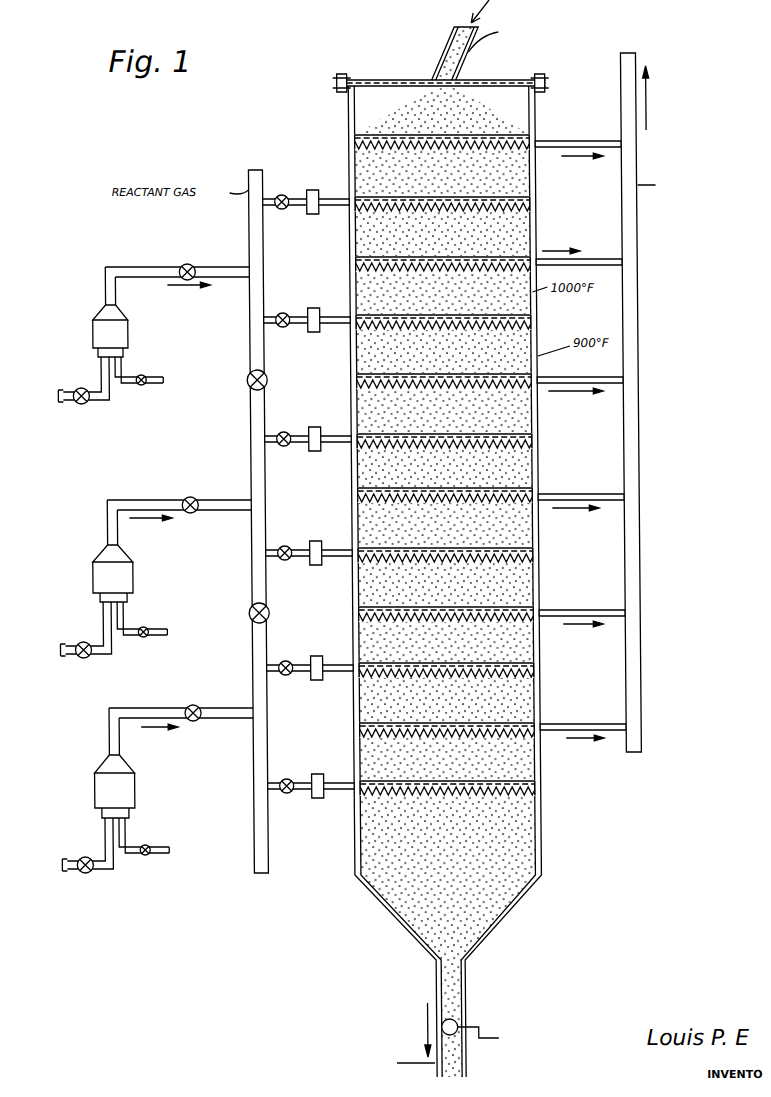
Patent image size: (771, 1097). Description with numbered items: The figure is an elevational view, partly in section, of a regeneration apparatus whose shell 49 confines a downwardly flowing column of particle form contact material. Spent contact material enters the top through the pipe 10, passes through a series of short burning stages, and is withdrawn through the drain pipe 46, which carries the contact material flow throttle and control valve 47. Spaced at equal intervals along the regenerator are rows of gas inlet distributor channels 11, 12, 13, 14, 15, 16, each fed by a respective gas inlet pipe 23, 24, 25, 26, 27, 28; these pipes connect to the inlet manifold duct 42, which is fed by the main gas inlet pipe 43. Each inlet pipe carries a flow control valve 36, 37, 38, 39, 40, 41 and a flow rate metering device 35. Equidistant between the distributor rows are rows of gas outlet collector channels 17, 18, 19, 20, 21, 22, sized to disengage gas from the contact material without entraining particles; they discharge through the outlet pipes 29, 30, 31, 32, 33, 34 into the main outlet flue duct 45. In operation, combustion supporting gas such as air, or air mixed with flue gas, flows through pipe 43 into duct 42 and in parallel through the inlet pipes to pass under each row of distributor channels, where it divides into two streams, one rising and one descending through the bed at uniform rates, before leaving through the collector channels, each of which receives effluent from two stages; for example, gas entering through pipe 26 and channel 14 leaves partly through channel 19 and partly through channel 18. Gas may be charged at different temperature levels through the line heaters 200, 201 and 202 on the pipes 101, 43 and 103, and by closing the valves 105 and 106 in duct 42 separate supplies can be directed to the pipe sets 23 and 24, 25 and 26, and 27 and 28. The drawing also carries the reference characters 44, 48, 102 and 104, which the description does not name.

The pipe 10 is at (448, 50).
The gas inlet distributor channel 11 is at (530, 203).
The gas inlet distributor channel 12 is at (530, 322).
The gas inlet distributor channel 13 is at (530, 441).
The gas inlet distributor channel 14 is at (530, 556).
The gas inlet distributor channel 15 is at (530, 671).
The gas inlet distributor channel 16 is at (530, 789).
The gas outlet collector channel 17 is at (353, 727).
The gas outlet collector channel 18 is at (353, 611).
The gas outlet collector channel 19 is at (353, 492).
The gas outlet collector channel 20 is at (353, 378).
The gas outlet collector channel 21 is at (353, 262).
The gas outlet collector channel 22 is at (353, 145).
The gas inlet pipe 23 is at (327, 197).
The gas inlet pipe 24 is at (327, 315).
The gas inlet pipe 25 is at (327, 434).
The gas inlet pipe 26 is at (327, 548).
The gas inlet pipe 27 is at (327, 663).
The gas inlet pipe 28 is at (327, 781).
The outlet pipe 29 is at (600, 132).
The outlet pipe 30 is at (600, 250).
The outlet pipe 31 is at (600, 368).
The outlet pipe 32 is at (602, 485).
The outlet pipe 33 is at (602, 602).
The outlet pipe 34 is at (602, 716).
The flow rate metering device 35 is at (305, 800).
The flow control valve 36 is at (281, 195).
The flow control valve 37 is at (281, 313).
The flow control valve 38 is at (281, 432).
The flow control valve 39 is at (281, 546).
The flow control valve 40 is at (281, 661).
The flow control valve 41 is at (281, 779).
The inlet manifold duct 42 is at (246, 588).
The main gas inlet pipe 43 is at (153, 499).
The manifold section 44 is at (215, 533).
The main outlet flue duct 45 is at (637, 438).
The drain pipe 46 is at (460, 990).
The contact material flow throttle and control valve 47 is at (449, 1024).
The vessel top closure 48 is at (400, 75).
The shell of regeneration vessel 49 is at (537, 856).
The pipe 101 is at (153, 277).
The valve 102 is at (196, 258).
The pipe 103 is at (148, 706).
The valve 104 is at (188, 721).
The valve 105 is at (244, 615).
The valve 106 is at (234, 380).
The line heater 200 is at (126, 334).
The line heater 201 is at (128, 577).
The line heater 202 is at (128, 790).